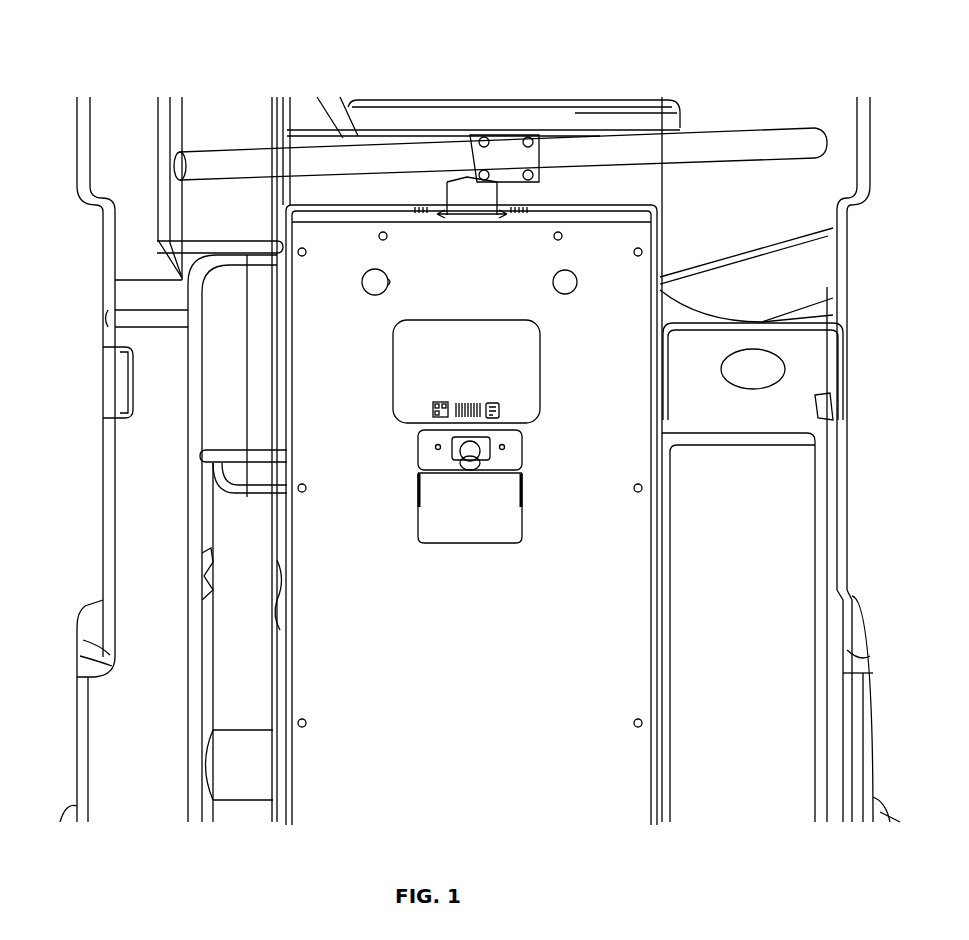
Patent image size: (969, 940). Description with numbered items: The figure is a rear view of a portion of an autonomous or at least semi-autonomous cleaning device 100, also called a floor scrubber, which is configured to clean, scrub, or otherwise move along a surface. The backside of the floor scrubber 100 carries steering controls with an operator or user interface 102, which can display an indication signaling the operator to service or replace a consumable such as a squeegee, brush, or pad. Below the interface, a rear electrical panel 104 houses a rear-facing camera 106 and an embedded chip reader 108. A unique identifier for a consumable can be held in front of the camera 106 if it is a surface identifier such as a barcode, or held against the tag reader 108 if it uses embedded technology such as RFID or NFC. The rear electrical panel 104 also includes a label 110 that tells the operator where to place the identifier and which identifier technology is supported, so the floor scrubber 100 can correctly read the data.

The semi-autonomous cleaning device 100 is at (697, 58).
The user interface 102 is at (733, 143).
The rear electrical panel 104 is at (591, 302).
The rear-facing camera 106 is at (488, 450).
The embedded chip reader 108 is at (512, 398).
The label 110 is at (393, 347).